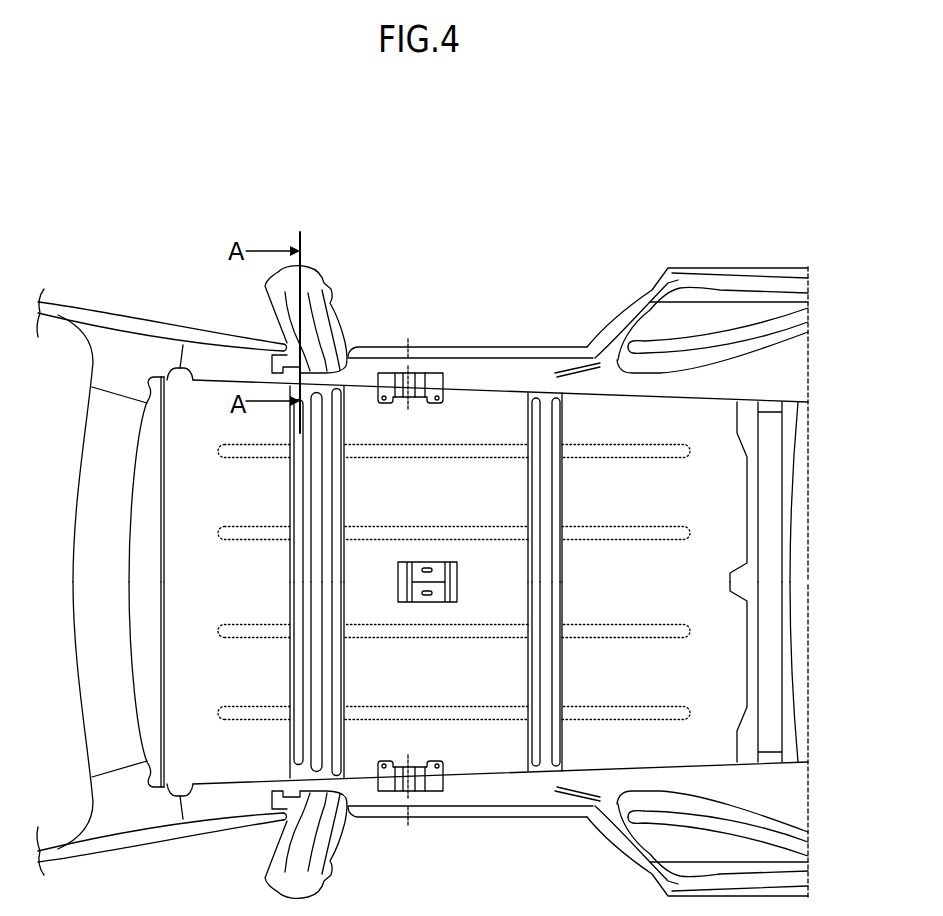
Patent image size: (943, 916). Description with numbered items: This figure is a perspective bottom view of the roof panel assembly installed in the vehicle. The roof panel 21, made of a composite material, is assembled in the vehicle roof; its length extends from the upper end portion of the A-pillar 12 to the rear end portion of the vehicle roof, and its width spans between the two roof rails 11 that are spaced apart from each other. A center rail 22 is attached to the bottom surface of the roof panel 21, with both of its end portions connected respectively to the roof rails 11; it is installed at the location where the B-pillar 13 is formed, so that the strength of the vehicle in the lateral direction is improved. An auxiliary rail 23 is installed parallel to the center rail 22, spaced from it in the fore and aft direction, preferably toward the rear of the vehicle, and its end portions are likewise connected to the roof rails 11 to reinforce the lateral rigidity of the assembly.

The roof rail 11 is at (487, 350).
The A-pillar 12 is at (68, 308).
The B-pillar 13 is at (310, 297).
The roof panel 21 is at (500, 413).
The center rail 22 is at (302, 430).
The auxiliary rail 23 is at (547, 423).